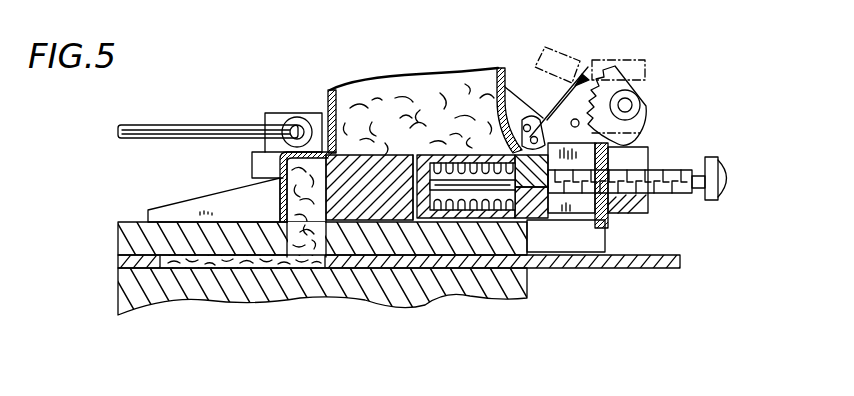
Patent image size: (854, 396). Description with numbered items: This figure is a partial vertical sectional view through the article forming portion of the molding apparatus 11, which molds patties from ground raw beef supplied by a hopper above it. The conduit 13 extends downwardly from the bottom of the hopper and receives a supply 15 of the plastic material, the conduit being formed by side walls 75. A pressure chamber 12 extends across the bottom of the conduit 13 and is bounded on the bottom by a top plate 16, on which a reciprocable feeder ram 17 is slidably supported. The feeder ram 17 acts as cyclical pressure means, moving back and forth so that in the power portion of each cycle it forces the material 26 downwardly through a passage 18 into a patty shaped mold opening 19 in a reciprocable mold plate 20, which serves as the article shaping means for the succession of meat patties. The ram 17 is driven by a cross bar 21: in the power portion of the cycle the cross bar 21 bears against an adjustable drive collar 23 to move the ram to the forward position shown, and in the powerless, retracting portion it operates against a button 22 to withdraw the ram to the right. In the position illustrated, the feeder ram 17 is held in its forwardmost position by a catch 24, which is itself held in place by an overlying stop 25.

The molding apparatus 11 is at (486, 58).
The pressure chamber 12 is at (245, 180).
The conduit 13 is at (328, 100).
The supply of plastic material 15 is at (392, 84).
The top plate 16 is at (128, 240).
The feeder ram 17 is at (415, 127).
The passage 18 is at (313, 253).
The mold opening 19 is at (203, 263).
The mold plate 20 is at (553, 268).
The cross bar 21 is at (638, 220).
The button 22 is at (722, 160).
The adjustable drive collar 23 is at (605, 230).
The catch 24 is at (594, 62).
The stop 25 is at (573, 60).
The material 26 is at (293, 220).
The side walls 75 is at (356, 85).